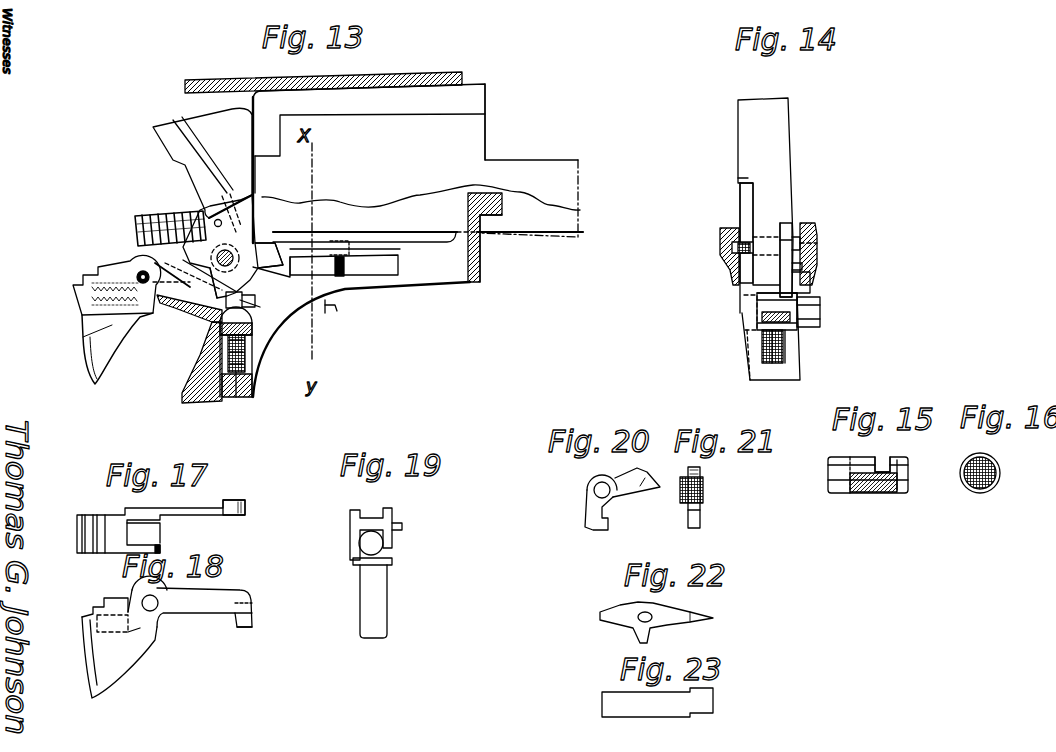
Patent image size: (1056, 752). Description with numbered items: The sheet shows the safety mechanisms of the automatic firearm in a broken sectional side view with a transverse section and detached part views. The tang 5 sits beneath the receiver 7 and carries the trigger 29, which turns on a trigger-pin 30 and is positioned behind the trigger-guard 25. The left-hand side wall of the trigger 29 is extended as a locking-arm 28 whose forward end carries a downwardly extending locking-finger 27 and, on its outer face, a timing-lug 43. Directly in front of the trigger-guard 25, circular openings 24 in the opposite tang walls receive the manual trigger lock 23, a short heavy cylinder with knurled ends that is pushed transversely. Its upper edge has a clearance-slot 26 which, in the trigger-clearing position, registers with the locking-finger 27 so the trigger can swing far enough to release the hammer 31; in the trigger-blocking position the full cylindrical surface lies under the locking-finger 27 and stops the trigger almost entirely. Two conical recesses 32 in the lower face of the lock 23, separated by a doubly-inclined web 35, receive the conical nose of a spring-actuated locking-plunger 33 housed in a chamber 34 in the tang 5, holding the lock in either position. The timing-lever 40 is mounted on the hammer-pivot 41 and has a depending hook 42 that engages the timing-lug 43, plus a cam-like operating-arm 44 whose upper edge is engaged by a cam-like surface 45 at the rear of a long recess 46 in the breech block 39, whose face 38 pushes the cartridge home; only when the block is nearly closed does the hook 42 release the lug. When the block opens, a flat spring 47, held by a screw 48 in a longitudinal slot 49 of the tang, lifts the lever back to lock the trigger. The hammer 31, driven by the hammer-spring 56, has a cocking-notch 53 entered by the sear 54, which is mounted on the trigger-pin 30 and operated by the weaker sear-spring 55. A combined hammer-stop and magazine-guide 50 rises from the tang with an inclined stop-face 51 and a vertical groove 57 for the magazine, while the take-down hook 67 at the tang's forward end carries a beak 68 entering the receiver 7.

In FIG. 14, the tang 5 is at (720, 241).
In FIG. 13, the receiver 7 is at (214, 81).
In FIG. 13, the manual safety or trigger lock 23 is at (257, 333).
In FIG. 14, the manual safety or trigger lock 23 is at (810, 328).
In FIG. 15, the manual safety or trigger lock 23 is at (843, 470).
In FIG. 16, the manual safety or trigger lock 23 is at (1000, 472).
In FIG. 13, the circular openings 24 is at (260, 320).
In FIG. 14, the circular openings 24 is at (798, 291).
In FIG. 13, the trigger-guard 25 is at (189, 392).
In FIG. 14, the trigger-guard 25 is at (757, 373).
In FIG. 13, the clearance-slot 26 is at (230, 317).
In FIG. 14, the clearance-slot 26 is at (787, 307).
In FIG. 15, the clearance-slot 26 is at (885, 462).
In FIG. 13, the locking-finger 27 is at (240, 295).
In FIG. 14, the locking-finger 27 is at (804, 283).
In FIG. 18, the locking-finger 27 is at (243, 622).
In FIG. 19, the locking-finger 27 is at (393, 545).
In FIG. 13, the locking-arm 28 is at (201, 269).
In FIG. 14, the locking-arm 28 is at (817, 247).
In FIG. 17, the locking-arm 28 is at (190, 508).
In FIG. 18, the locking-arm 28 is at (204, 603).
In FIG. 19, the locking-arm 28 is at (393, 512).
In FIG. 13, the trigger 29 is at (118, 312).
In FIG. 17, the trigger 29 is at (163, 544).
In FIG. 18, the trigger 29 is at (138, 628).
In FIG. 19, the trigger 29 is at (370, 595).
In FIG. 13, the trigger-pin 30 is at (137, 268).
In FIG. 13, the hammer 31 is at (202, 170).
In FIG. 14, the hammer 31 is at (765, 197).
In FIG. 13, the conical recesses 32 is at (220, 331).
In FIG. 14, the conical recesses 32 is at (785, 331).
In FIG. 15, the conical recesses 32 is at (877, 490).
In FIG. 13, the spring-actuated locking-plunger 33 is at (259, 357).
In FIG. 14, the spring-actuated locking-plunger 33 is at (767, 340).
In FIG. 13, the chamber 34 is at (243, 398).
In FIG. 14, the chamber 34 is at (772, 364).
In FIG. 14, the doubly-inclined web 35 is at (763, 311).
In FIG. 15, the doubly-inclined web 35 is at (905, 478).
In FIG. 13, the face of the breech block 38 is at (487, 125).
In FIG. 13, the balanced breech block or closure 39 is at (418, 240).
In FIG. 13, the timing-lever 40 is at (233, 246).
In FIG. 14, the timing-lever 40 is at (794, 245).
In FIG. 20, the timing-lever 40 is at (584, 484).
In FIG. 21, the timing-lever 40 is at (681, 491).
In FIG. 13, the hammer-pivot 41 is at (252, 262).
In FIG. 14, the hammer-pivot 41 is at (799, 240).
In FIG. 13, the hook 42 is at (205, 275).
In FIG. 20, the hook 42 is at (587, 525).
In FIG. 21, the hook 42 is at (700, 521).
In FIG. 13, the timing-lug 43 is at (337, 308).
In FIG. 14, the timing-lug 43 is at (811, 273).
In FIG. 17, the timing-lug 43 is at (238, 500).
In FIG. 18, the timing-lug 43 is at (238, 604).
In FIG. 19, the timing-lug 43 is at (402, 527).
In FIG. 13, the cam-like operating-arm 44 is at (265, 262).
In FIG. 14, the cam-like operating-arm 44 is at (816, 240).
In FIG. 20, the cam-like operating-arm 44 is at (647, 483).
In FIG. 21, the cam-like operating-arm 44 is at (701, 489).
In FIG. 13, the cam-like surface 45 is at (262, 242).
In FIG. 13, the long recess 46 is at (421, 205).
In FIG. 13, the flat spring 47 is at (330, 313).
In FIG. 13, the screw 48 is at (350, 263).
In FIG. 13, the longitudinal slot 49 is at (390, 265).
In FIG. 14, the combined hammer-stop and magazine-guide 50 is at (745, 204).
In FIG. 13, the stop-face 51 is at (247, 193).
In FIG. 14, the stop-face 51 is at (740, 180).
In FIG. 13, the cocking-notch 53 is at (152, 288).
In FIG. 13, the sear 54 is at (173, 322).
In FIG. 22, the sear 54 is at (670, 622).
In FIG. 23, the sear 54 is at (657, 702).
In FIG. 13, the sear-spring 55 is at (90, 298).
In FIG. 13, the hammer-spring 56 is at (167, 214).
In FIG. 14, the vertical groove 57 is at (748, 213).
In FIG. 13, the combined magazine-guide and take-down hook 67 is at (481, 246).
In FIG. 13, the beak 68 is at (500, 216).